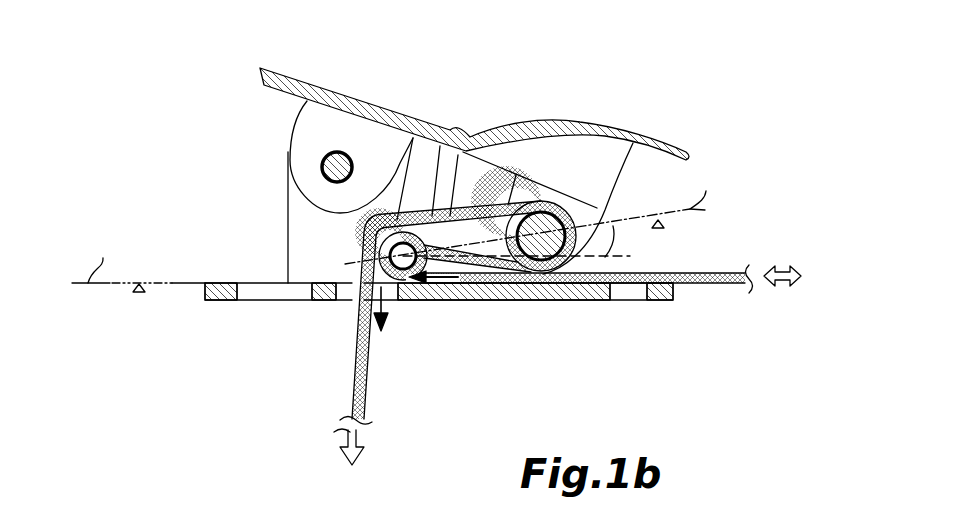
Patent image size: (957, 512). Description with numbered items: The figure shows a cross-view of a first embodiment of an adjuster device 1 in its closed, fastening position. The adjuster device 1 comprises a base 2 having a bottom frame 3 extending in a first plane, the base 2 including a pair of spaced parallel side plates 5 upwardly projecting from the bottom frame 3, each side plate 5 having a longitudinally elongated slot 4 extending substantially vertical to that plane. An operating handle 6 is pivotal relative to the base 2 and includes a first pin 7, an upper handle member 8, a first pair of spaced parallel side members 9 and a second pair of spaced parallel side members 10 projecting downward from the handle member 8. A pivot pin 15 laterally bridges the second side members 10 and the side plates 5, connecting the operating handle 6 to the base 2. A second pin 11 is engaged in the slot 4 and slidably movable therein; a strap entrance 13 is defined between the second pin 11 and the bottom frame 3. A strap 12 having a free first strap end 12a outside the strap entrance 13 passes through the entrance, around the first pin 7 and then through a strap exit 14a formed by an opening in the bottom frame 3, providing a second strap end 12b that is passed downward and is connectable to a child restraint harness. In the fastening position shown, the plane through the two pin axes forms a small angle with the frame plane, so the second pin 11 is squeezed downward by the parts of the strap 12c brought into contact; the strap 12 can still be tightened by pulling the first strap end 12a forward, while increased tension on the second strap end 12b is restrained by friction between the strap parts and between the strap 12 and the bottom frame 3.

The adjuster device 1 is at (593, 63).
The base 2 is at (248, 252).
The bottom frame 3 is at (553, 300).
The longitudinally elongated slot 4 is at (428, 165).
The side plate 5 is at (339, 253).
The operating handle 6 is at (241, 97).
The first pin 7 is at (537, 228).
The upper handle member 8 is at (600, 171).
The first pair of spaced parallel side members 9 is at (515, 190).
The second pair of spaced parallel side members 10 is at (321, 141).
The second pin 11 is at (398, 274).
The strap 12 is at (702, 292).
The free first strap end 12a is at (733, 270).
The second strap end 12b is at (361, 406).
The parts of the strap 12c is at (366, 250).
The strap entrance 13 is at (436, 281).
The strap exit 14a is at (386, 303).
The pivot pin 15 is at (330, 167).